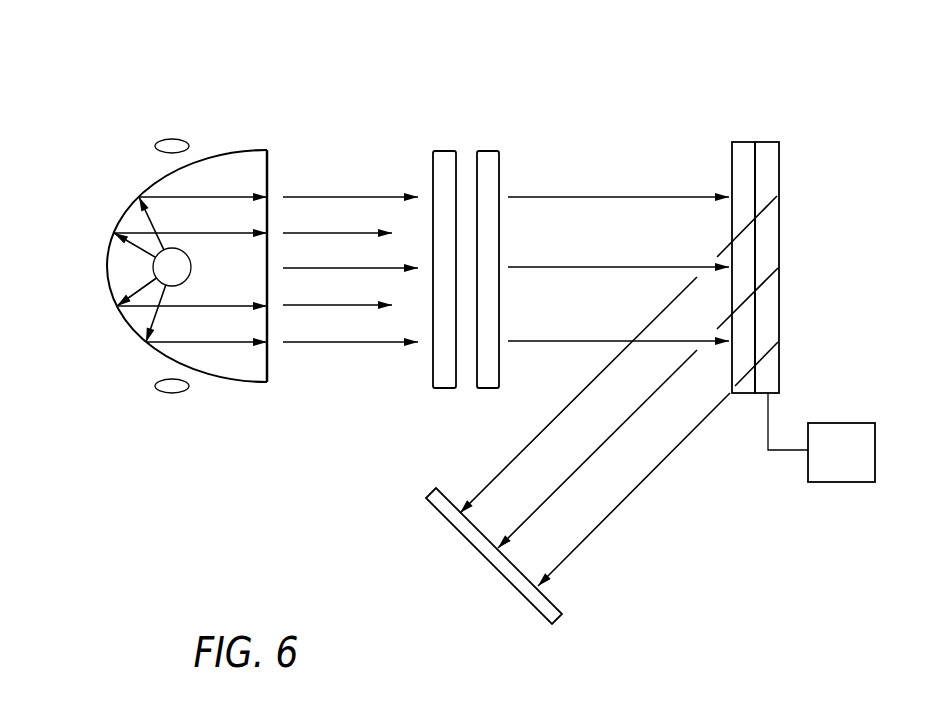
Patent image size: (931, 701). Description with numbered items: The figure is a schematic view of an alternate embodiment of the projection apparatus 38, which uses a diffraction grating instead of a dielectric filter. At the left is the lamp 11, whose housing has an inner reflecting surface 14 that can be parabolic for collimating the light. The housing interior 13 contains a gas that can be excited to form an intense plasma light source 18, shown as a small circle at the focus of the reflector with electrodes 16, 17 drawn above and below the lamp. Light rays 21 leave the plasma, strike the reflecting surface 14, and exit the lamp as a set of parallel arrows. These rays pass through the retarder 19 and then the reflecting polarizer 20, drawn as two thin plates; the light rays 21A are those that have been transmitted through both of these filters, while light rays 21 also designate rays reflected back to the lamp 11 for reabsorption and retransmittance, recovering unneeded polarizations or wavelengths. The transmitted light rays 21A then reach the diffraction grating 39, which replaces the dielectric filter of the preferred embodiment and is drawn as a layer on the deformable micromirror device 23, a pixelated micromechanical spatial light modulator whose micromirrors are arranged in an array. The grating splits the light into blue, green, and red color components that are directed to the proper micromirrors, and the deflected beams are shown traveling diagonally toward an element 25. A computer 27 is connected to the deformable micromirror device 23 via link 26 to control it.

The lamp 11 is at (163, 352).
The housing interior 13 is at (250, 165).
The inner reflecting surface 14 is at (116, 272).
The electrode 16 is at (170, 139).
The electrode 17 is at (166, 396).
The plasma light source 18 is at (192, 267).
The retarder 19 is at (443, 150).
The reflecting polarizer 20 is at (490, 150).
The light rays 21 is at (218, 231).
The transmitted light rays 21A is at (578, 197).
The deformable micromirror device 23 is at (767, 142).
The mirror / detector surface 25 is at (477, 550).
The link 26 is at (766, 428).
The computer 27 is at (827, 466).
The projection apparatus 38 is at (477, 84).
The diffraction grating 39 is at (742, 142).